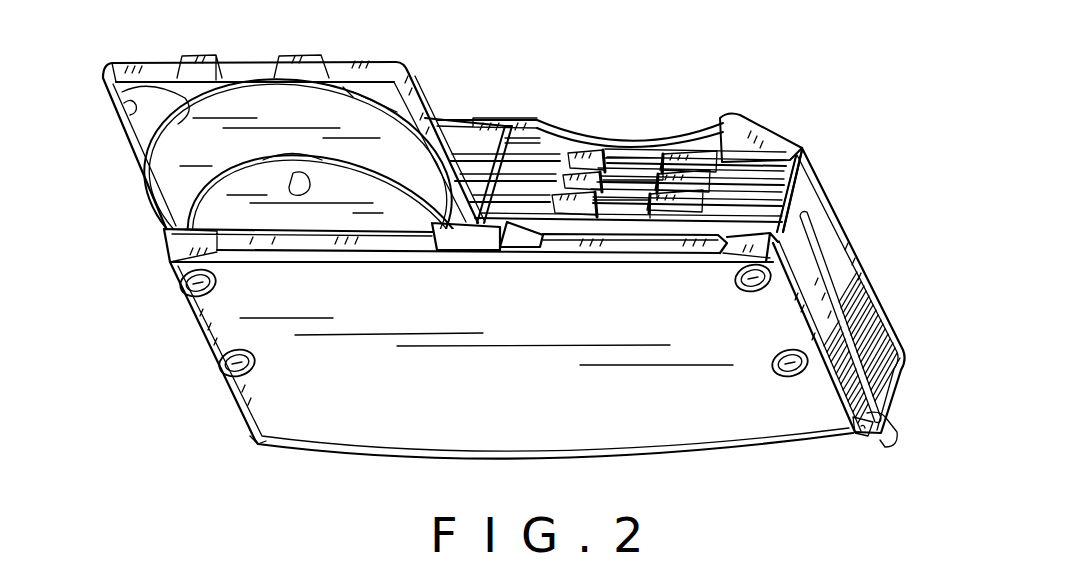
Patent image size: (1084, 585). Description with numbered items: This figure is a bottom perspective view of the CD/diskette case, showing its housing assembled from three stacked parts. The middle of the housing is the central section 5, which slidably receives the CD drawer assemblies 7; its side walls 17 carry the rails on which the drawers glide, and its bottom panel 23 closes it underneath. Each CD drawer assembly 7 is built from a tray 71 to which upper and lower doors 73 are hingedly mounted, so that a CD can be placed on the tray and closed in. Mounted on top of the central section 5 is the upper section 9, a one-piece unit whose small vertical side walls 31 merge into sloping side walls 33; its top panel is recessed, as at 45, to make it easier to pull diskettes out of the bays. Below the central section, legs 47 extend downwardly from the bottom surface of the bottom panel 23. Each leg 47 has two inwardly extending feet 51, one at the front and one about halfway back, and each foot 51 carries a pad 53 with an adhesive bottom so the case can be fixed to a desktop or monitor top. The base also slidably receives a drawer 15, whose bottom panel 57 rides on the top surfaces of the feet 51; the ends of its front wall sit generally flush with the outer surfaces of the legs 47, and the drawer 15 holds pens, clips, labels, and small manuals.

The central section 5 is at (836, 257).
The CD drawer assembly 7 is at (135, 168).
The upper section 9 is at (808, 146).
The drawer 15 is at (660, 252).
The side walls 17 is at (805, 208).
The bottom panel 23 is at (862, 434).
The vertical side walls 31 is at (877, 296).
The sloping side walls 33 is at (765, 128).
The recess 45 is at (548, 125).
The legs 47 is at (230, 398).
The feet 51 is at (208, 281).
The pads 53 is at (203, 337).
The bottom panel 57 is at (525, 398).
The tray 71 is at (113, 114).
The doors 73 is at (225, 213).